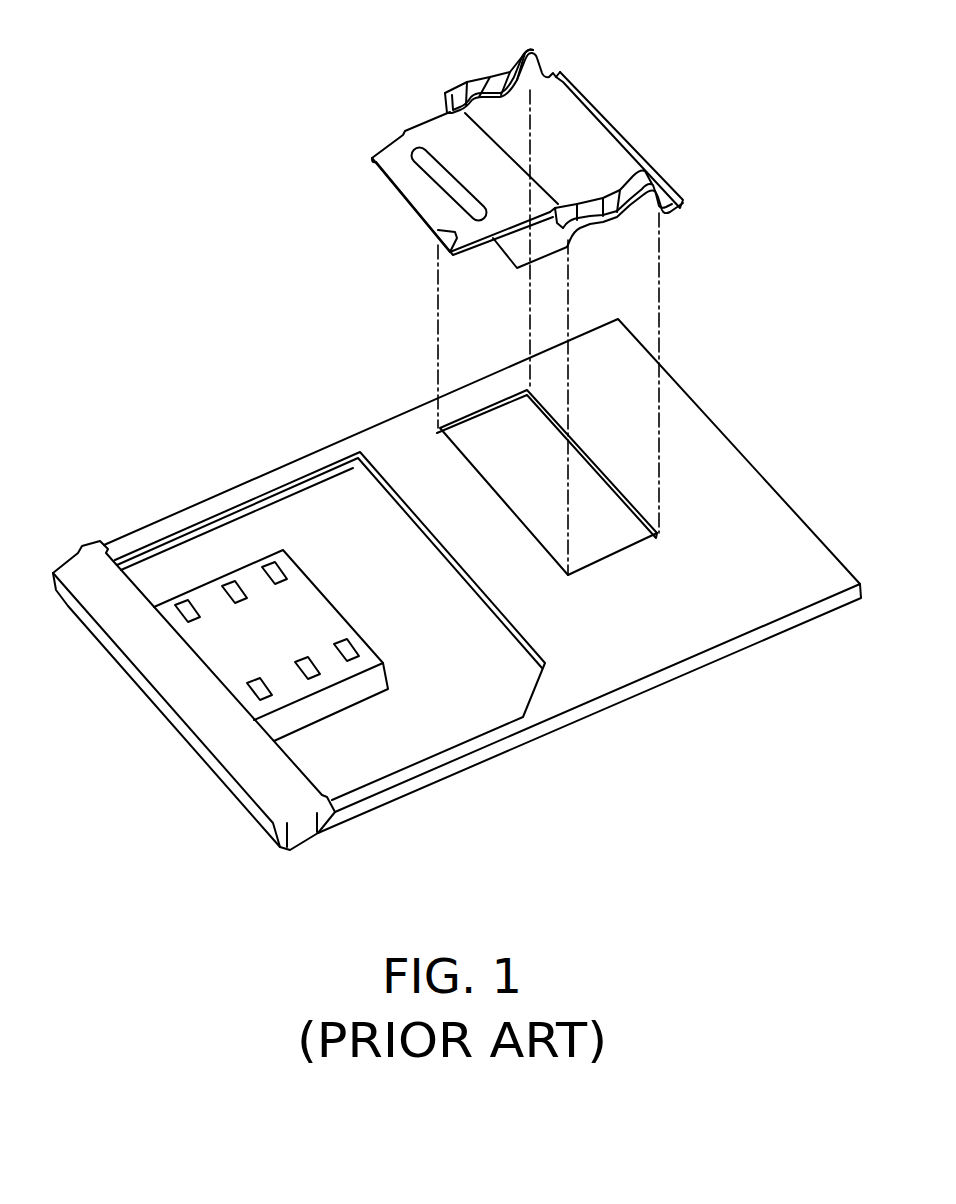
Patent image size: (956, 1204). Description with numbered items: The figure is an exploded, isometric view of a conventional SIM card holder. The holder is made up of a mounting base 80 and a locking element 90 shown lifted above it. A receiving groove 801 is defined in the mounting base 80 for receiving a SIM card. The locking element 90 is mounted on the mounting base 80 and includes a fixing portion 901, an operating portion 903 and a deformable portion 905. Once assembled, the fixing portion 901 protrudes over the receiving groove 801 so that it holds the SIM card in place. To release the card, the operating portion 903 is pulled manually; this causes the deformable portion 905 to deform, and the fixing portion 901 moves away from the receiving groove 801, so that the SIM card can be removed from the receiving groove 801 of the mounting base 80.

The mounting base 80 is at (457, 481).
The receiving groove 801 is at (448, 707).
The locking element 90 is at (493, 147).
The fixing portion 901 is at (400, 153).
The operating portion 903 is at (445, 182).
The deformable portion 905 is at (527, 63).